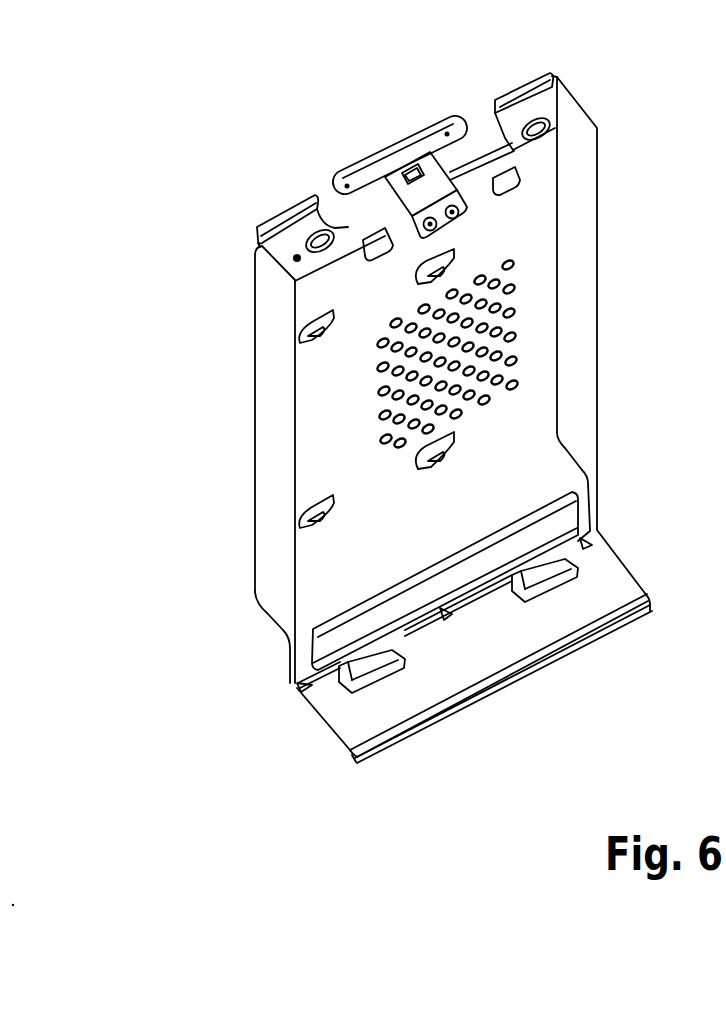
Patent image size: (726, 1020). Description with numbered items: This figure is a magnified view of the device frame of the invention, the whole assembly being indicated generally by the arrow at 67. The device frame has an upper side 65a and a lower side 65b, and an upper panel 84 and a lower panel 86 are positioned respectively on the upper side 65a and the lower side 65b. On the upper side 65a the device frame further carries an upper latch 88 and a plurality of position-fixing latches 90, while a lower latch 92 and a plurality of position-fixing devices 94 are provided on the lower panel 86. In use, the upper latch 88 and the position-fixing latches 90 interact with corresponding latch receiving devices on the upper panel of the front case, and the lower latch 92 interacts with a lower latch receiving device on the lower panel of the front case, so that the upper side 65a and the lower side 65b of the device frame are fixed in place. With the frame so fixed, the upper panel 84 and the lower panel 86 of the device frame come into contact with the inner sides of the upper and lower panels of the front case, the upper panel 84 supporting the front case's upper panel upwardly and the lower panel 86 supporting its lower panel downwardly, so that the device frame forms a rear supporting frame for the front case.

The drive tray 67 is at (146, 152).
The upper side 65a is at (332, 220).
The lower side 65b is at (385, 700).
The upper panel 84 is at (557, 88).
The lower panel 86 is at (597, 585).
The upper latch 88 is at (402, 152).
The position-fixing latches 90 is at (258, 232).
The lower latch 92 is at (525, 660).
The position-fixing devices 94 is at (342, 687).